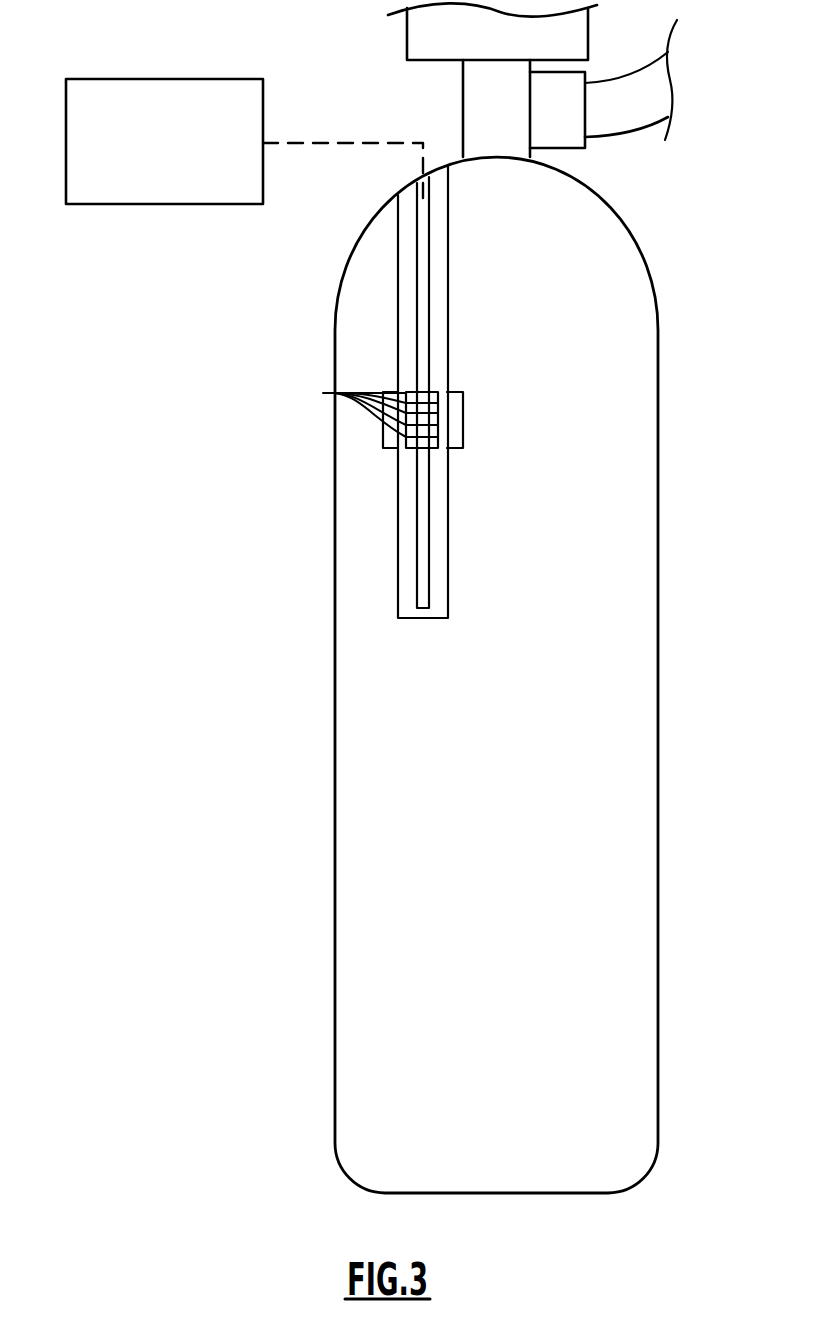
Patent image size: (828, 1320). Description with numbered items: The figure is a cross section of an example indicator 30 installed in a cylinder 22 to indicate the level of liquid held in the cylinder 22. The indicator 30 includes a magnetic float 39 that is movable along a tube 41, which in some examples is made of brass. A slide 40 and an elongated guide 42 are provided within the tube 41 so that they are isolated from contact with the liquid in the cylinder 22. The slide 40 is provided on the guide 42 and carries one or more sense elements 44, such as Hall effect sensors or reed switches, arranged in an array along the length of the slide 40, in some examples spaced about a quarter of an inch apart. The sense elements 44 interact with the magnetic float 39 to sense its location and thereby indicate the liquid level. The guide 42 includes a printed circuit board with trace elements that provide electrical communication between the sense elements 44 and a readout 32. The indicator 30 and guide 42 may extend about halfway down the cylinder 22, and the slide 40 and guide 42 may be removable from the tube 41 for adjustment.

The cylinder 22 is at (383, 948).
The indicator 30 is at (422, 391).
The readout 32 is at (198, 79).
The magnetic float 39 is at (463, 425).
The slide 40 is at (433, 392).
The tube 41 is at (448, 485).
The elongated guide 42 is at (429, 567).
The sense elements 44 is at (351, 408).